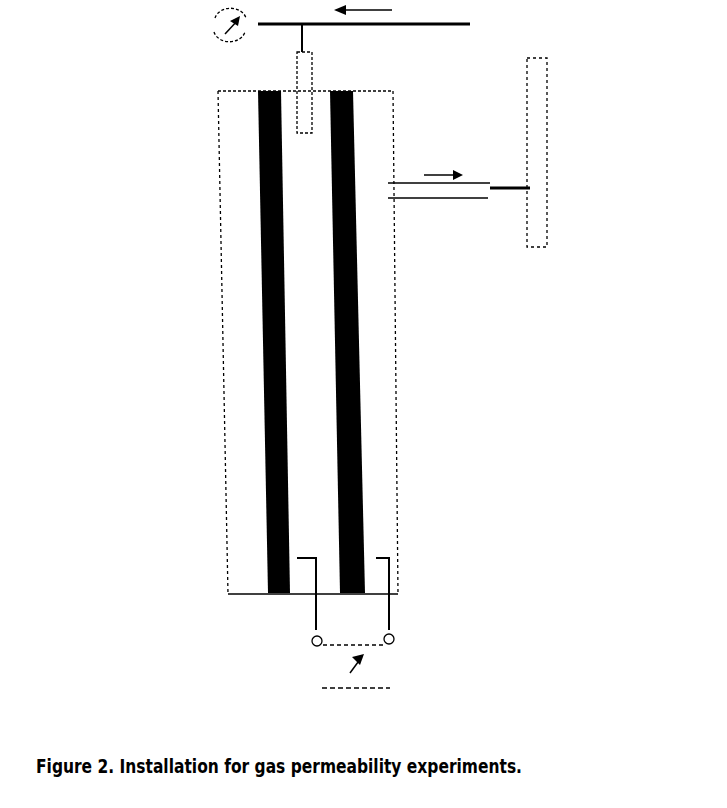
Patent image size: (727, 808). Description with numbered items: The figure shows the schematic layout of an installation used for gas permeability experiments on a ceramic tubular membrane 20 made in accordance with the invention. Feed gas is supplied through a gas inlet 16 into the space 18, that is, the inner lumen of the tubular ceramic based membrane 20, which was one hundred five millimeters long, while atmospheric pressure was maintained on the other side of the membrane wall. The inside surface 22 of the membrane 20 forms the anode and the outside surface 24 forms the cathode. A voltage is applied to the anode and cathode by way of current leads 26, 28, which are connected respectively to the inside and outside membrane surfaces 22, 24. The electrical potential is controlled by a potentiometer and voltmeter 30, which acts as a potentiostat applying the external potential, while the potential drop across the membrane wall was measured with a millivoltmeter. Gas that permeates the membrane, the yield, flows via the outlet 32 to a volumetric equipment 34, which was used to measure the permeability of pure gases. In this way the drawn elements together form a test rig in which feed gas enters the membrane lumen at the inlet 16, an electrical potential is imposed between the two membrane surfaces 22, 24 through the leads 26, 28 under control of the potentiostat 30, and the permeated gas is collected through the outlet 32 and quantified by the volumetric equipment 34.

The gas inlet 16 is at (302, 73).
The space 18 is at (304, 302).
The ceramic tubular membrane 20 is at (263, 358).
The inside surface 22 is at (286, 420).
The outside surface 24 is at (266, 487).
The lead 26 is at (317, 630).
The lead 28 is at (389, 607).
The potentiometer and voltmeter 30 is at (383, 680).
The outlet 32 is at (444, 195).
The volumetric equipment 34 is at (543, 163).